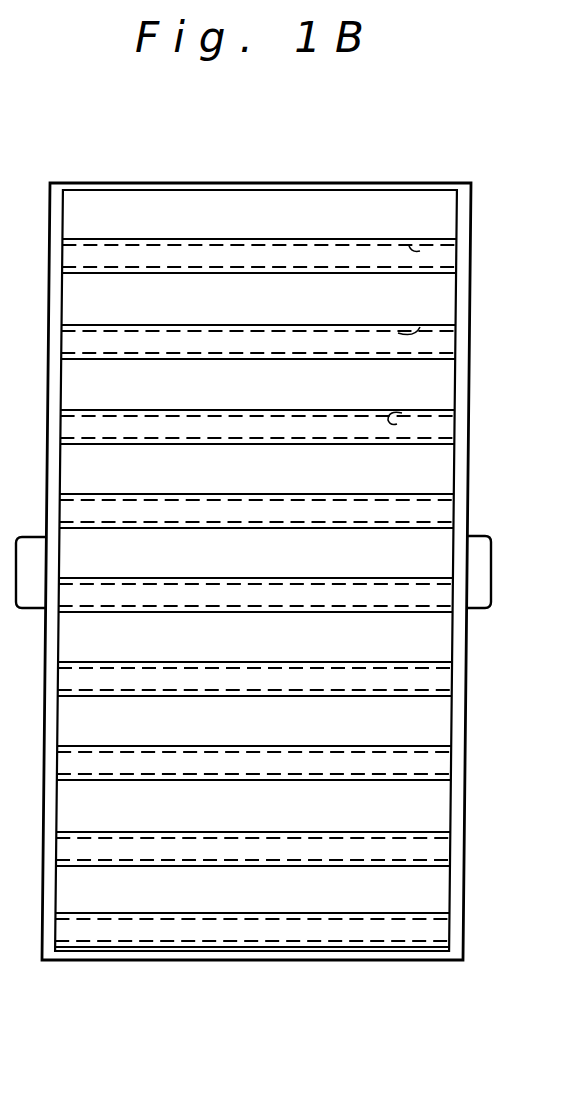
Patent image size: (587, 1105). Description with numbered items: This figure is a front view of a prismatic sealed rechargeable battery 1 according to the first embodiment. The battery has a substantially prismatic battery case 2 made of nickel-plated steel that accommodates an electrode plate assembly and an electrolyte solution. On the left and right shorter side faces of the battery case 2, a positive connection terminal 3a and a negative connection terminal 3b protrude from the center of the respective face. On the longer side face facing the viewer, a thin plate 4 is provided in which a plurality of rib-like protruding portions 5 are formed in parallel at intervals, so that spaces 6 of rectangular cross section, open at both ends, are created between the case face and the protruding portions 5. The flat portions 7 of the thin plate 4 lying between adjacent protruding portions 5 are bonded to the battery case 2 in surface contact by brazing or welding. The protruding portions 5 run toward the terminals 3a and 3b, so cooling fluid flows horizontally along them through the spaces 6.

The prismatic sealed rechargeable battery 1 is at (268, 533).
The battery case 2 is at (97, 183).
The positive connection terminal 3a is at (33, 545).
The negative connection terminal 3b is at (478, 548).
The thin plate 4 is at (270, 190).
The rib-like protruding portions 5 is at (118, 430).
The spaces 6 is at (404, 413).
The flat portions 7 is at (333, 402).